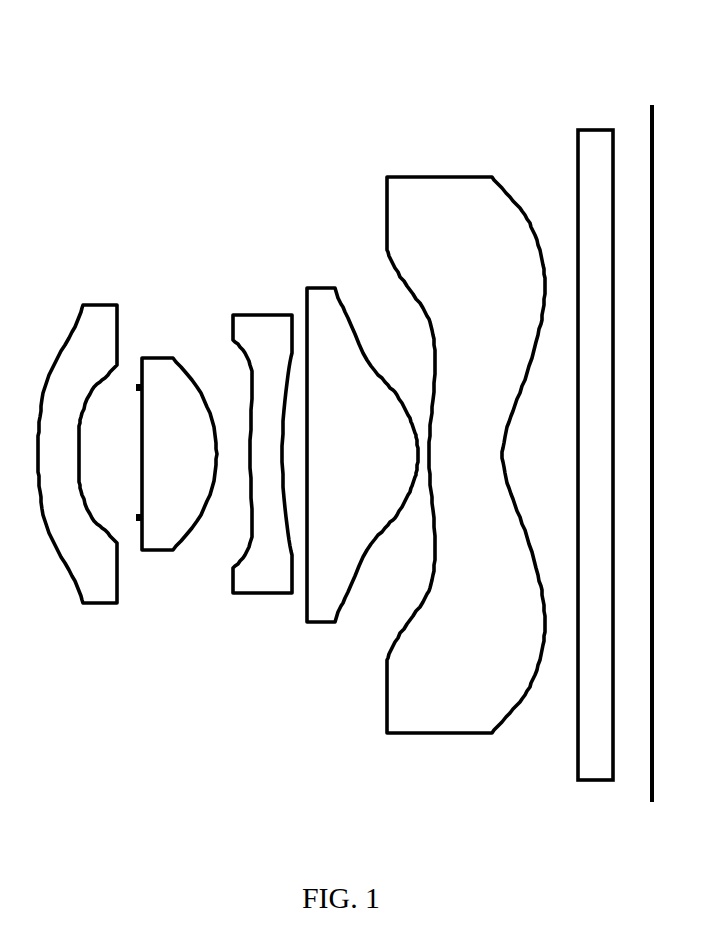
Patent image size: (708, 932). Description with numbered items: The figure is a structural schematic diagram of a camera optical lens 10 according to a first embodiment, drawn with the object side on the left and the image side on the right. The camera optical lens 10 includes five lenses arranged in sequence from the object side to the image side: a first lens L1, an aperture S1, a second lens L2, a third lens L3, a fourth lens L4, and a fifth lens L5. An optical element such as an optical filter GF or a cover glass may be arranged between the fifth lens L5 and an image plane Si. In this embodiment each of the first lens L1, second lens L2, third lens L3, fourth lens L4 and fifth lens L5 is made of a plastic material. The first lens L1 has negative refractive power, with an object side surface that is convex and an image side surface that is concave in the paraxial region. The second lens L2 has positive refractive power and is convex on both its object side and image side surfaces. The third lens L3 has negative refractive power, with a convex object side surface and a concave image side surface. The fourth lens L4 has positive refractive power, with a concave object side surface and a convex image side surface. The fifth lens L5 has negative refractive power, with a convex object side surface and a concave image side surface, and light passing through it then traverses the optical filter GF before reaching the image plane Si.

The camera optical lens 10 is at (363, 37).
The first lens L1 is at (77, 438).
The aperture S1 is at (124, 448).
The second lens L2 is at (179, 439).
The third lens L3 is at (262, 437).
The fourth lens L4 is at (362, 438).
The fifth lens L5 is at (466, 437).
The optical filter GF is at (595, 439).
The image plane Si is at (651, 439).